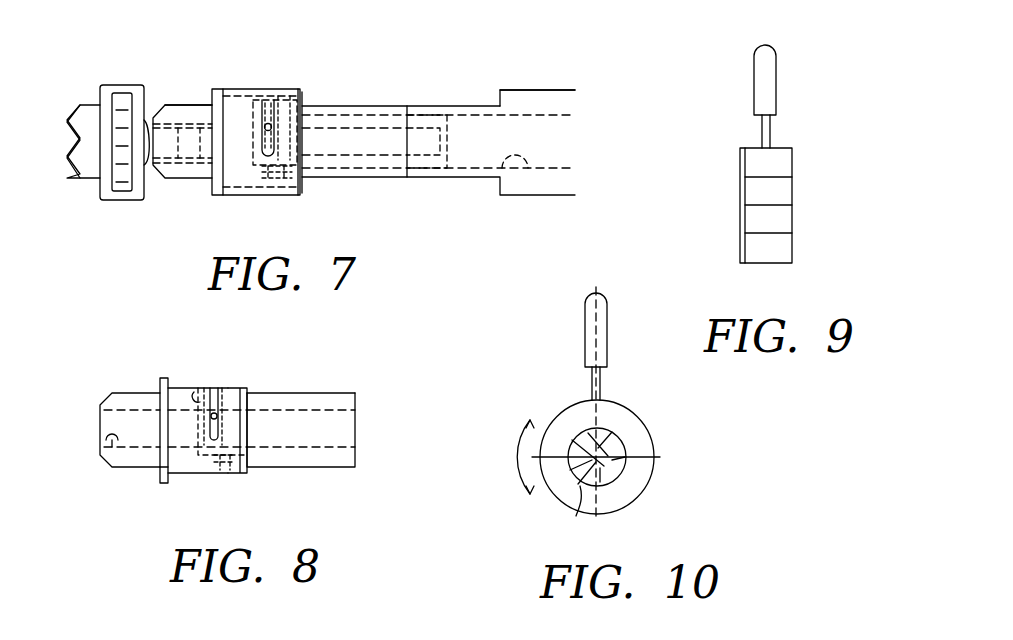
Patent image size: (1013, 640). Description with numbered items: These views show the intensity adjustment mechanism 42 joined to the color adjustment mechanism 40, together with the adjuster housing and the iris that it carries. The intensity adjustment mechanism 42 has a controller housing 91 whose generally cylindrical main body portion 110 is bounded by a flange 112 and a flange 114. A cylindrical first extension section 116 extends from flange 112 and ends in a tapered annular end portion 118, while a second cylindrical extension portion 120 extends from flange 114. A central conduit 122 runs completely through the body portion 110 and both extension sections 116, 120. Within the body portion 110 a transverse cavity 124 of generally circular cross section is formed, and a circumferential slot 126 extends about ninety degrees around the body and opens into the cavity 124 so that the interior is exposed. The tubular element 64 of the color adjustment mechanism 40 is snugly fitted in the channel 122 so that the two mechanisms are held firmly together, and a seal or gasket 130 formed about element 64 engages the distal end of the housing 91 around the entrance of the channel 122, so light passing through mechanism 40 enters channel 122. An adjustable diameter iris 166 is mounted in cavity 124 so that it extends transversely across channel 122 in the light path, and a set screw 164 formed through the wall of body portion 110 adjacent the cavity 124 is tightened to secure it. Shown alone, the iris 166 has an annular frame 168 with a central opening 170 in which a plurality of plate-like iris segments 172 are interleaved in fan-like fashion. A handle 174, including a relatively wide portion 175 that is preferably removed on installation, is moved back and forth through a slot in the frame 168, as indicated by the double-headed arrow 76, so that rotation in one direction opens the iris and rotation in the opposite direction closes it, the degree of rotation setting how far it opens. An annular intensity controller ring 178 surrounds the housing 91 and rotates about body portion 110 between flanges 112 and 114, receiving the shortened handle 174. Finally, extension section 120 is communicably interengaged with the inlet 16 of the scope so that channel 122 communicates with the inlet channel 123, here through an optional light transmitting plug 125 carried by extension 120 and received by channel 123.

In FIG. 7, the inlet 16 is at (440, 112).
In FIG. 7, the color adjustment mechanism 40 is at (108, 84).
In FIG. 7, the intensity adjustment mechanism 42 is at (275, 92).
In FIG. 7, the tubular element 64 is at (182, 124).
In FIG. 10, the double-headed arrow 76 is at (522, 452).
In FIG. 7, the controller housing 91 is at (192, 104).
In FIG. 8, the controller housing 91 is at (192, 394).
In FIG. 7, the main body portion 110 is at (252, 94).
In FIG. 8, the main body portion 110 is at (244, 476).
In FIG. 7, the flange 112 is at (216, 88).
In FIG. 8, the flange 112 is at (160, 380).
In FIG. 7, the flange 114 is at (306, 104).
In FIG. 8, the flange 114 is at (248, 390).
In FIG. 8, the first extension section 116 is at (140, 468).
In FIG. 8, the tapered annular end portion 118 is at (100, 396).
In FIG. 7, the second cylindrical extension portion 120 is at (395, 180).
In FIG. 8, the second cylindrical extension portion 120 is at (346, 394).
In FIG. 7, the central conduit 122 is at (344, 176).
In FIG. 8, the central conduit 122 is at (98, 442).
In FIG. 7, the inlet channel 123 is at (494, 190).
In FIG. 7, the transverse cavity 124 is at (242, 182).
In FIG. 8, the transverse cavity 124 is at (200, 388).
In FIG. 7, the light transmitting plug 125 is at (440, 180).
In FIG. 7, the circumferential slot 126 is at (300, 92).
In FIG. 8, the circumferential slot 126 is at (214, 388).
In FIG. 7, the seal or gasket 130 is at (145, 200).
In FIG. 8, the set screw 164 is at (222, 476).
In FIG. 7, the adjustable diameter iris 166 is at (306, 192).
In FIG. 8, the adjustable diameter iris 166 is at (190, 448).
In FIG. 9, the adjustable diameter iris 166 is at (740, 158).
In FIG. 10, the adjustable diameter iris 166 is at (634, 410).
In FIG. 9, the annular frame 168 is at (784, 254).
In FIG. 10, the annular frame 168 is at (652, 472).
In FIG. 9, the central opening 170 is at (778, 178).
In FIG. 10, the central opening 170 is at (585, 430).
In FIG. 10, the iris segments 172 is at (585, 486).
In FIG. 9, the handle 174 is at (774, 50).
In FIG. 10, the handle 174 is at (608, 312).
In FIG. 10, the wide portion 175 is at (598, 330).
In FIG. 7, the annular intensity controller ring 178 is at (306, 100).